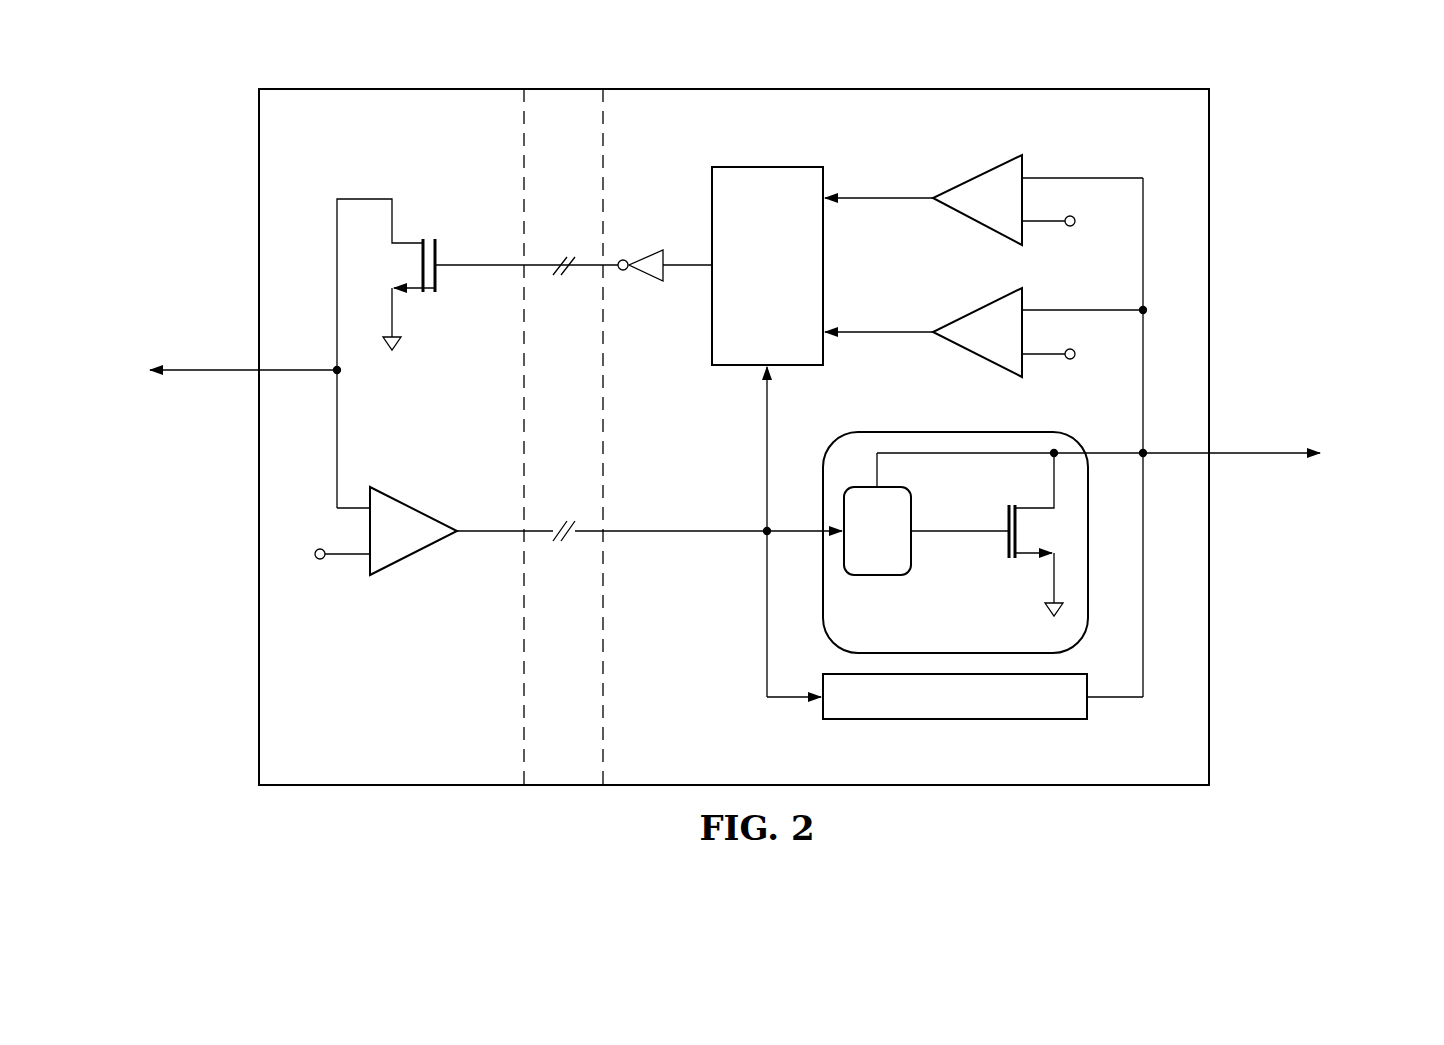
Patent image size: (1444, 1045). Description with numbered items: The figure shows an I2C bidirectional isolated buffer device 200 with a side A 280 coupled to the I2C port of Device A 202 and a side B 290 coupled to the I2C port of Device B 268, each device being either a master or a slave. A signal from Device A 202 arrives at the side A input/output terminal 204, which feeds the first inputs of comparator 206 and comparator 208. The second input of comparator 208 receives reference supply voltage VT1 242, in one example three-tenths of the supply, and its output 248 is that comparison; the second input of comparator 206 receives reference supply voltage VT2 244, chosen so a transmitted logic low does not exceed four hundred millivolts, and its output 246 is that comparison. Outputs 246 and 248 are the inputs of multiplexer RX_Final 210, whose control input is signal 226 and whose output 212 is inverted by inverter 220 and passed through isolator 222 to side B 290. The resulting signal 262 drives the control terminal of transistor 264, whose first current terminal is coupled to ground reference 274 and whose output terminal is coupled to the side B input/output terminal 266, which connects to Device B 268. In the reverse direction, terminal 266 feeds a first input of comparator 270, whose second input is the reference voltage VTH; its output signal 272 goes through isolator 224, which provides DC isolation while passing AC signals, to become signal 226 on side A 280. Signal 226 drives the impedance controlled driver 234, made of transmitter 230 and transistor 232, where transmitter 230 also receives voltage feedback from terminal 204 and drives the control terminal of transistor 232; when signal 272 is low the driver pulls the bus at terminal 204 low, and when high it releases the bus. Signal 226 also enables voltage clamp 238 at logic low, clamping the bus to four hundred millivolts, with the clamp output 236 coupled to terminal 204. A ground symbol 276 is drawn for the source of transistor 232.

The I2C bidirectional isolated buffer device 200 is at (1267, 230).
The Device A 202 is at (1281, 455).
The side A input/output terminal 204 is at (1163, 455).
The comparator 206 is at (977, 310).
The comparator 208 is at (977, 177).
The multiplexer RX_Final 210 is at (789, 299).
The output of RX_Final 212 is at (685, 270).
The inverter 220 is at (642, 252).
The isolator 222 is at (562, 252).
The isolator 224 is at (560, 545).
The output signal of isolator 224 226 is at (672, 536).
The transmitter 230 is at (885, 578).
The transistor 232 is at (1007, 517).
The impedance controlled driver 234 is at (915, 428).
The output of voltage clamp 236 is at (1115, 699).
The voltage clamp 238 is at (953, 720).
The reference supply voltage VT1 242 is at (1043, 223).
The reference supply voltage VT2 244 is at (1043, 356).
The output of comparator 206 246 is at (871, 330).
The output of comparator 208 248 is at (871, 196).
The signal 262 is at (490, 270).
The transistor 264 is at (437, 257).
The side B input/output terminal 266 is at (302, 370).
The Device B 268 is at (191, 372).
The comparator 270 is at (413, 553).
The signal 272 is at (490, 530).
The ground reference 274 is at (397, 343).
The ground (side A) 276 is at (1047, 607).
The side A 280 is at (910, 97).
The side B 290 is at (390, 97).